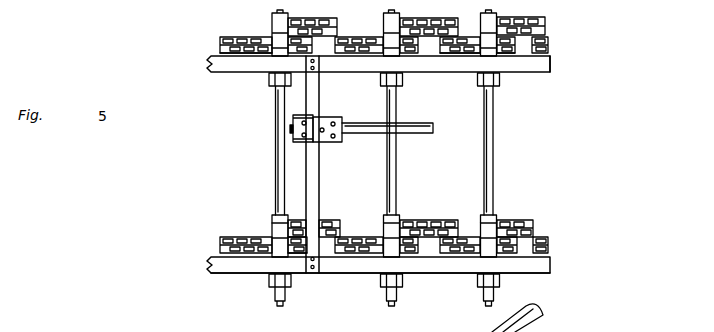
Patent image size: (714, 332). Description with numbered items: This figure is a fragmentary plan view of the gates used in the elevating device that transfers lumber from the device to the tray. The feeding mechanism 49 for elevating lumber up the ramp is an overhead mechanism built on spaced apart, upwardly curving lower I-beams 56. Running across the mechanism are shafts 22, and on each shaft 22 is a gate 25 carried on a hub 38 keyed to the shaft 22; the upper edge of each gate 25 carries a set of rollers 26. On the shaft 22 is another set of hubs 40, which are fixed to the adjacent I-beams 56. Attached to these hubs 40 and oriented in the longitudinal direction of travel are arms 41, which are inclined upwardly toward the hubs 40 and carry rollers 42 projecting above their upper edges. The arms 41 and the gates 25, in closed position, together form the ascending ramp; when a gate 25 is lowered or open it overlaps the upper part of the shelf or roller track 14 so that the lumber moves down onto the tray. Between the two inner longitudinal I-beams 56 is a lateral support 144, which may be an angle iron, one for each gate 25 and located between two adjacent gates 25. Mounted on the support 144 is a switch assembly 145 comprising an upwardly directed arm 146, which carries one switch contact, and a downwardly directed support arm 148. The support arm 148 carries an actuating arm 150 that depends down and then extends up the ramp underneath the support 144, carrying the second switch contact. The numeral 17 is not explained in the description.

The roller track 14 is at (420, 52).
The base frame 17 is at (244, 275).
The shaft 22 is at (394, 170).
The gate 25 is at (336, 19).
The rollers 26 is at (343, 24).
The hub 38 is at (272, 20).
The hub 40 is at (276, 52).
The arm 41 is at (236, 37).
The rollers 42 is at (228, 40).
The feeding mechanism 49 is at (552, 63).
The lower I-beam 56 is at (208, 62).
The lateral support 144 is at (314, 169).
The switch assembly 145 is at (299, 145).
The upwardly directed arm 146 is at (333, 117).
The support arm 148 is at (295, 115).
The actuating arm 150 is at (422, 123).